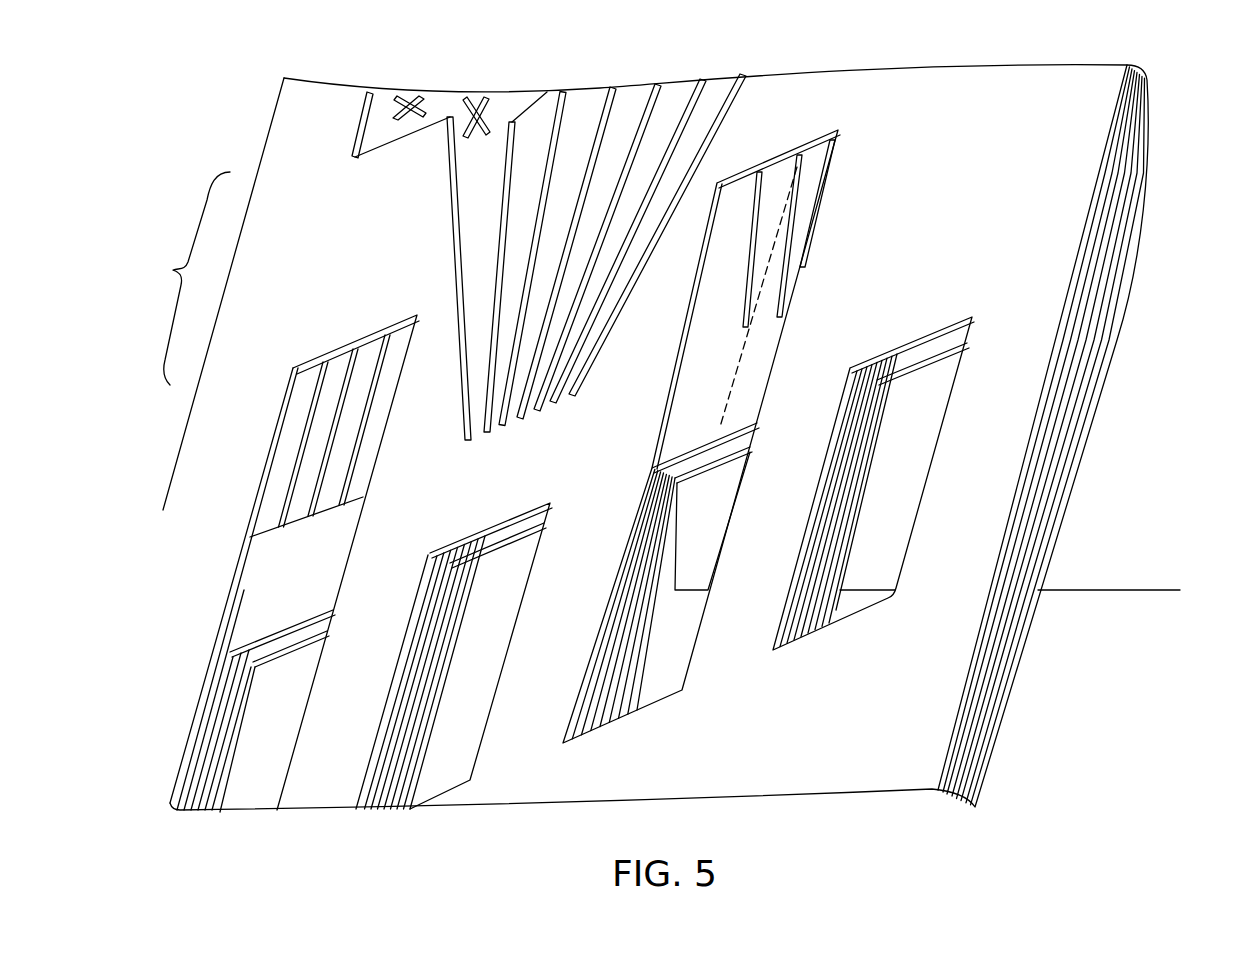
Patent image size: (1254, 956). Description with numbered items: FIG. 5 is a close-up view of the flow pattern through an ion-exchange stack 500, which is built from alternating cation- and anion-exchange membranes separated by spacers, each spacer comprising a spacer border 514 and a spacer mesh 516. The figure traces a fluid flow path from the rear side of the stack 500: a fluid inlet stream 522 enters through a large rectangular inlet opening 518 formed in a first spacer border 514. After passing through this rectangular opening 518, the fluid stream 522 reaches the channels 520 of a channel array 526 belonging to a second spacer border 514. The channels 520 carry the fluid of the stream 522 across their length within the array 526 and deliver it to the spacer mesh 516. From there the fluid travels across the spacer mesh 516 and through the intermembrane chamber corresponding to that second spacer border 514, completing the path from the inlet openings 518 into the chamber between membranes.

The stack 500 is at (155, 114).
The spacer border 514 is at (1082, 162).
The spacer mesh 516 is at (474, 93).
The inlet openings 518 is at (462, 783).
The channels 520 is at (727, 92).
The fluid inlet stream 522 is at (1117, 590).
The array of channels 526 is at (182, 278).